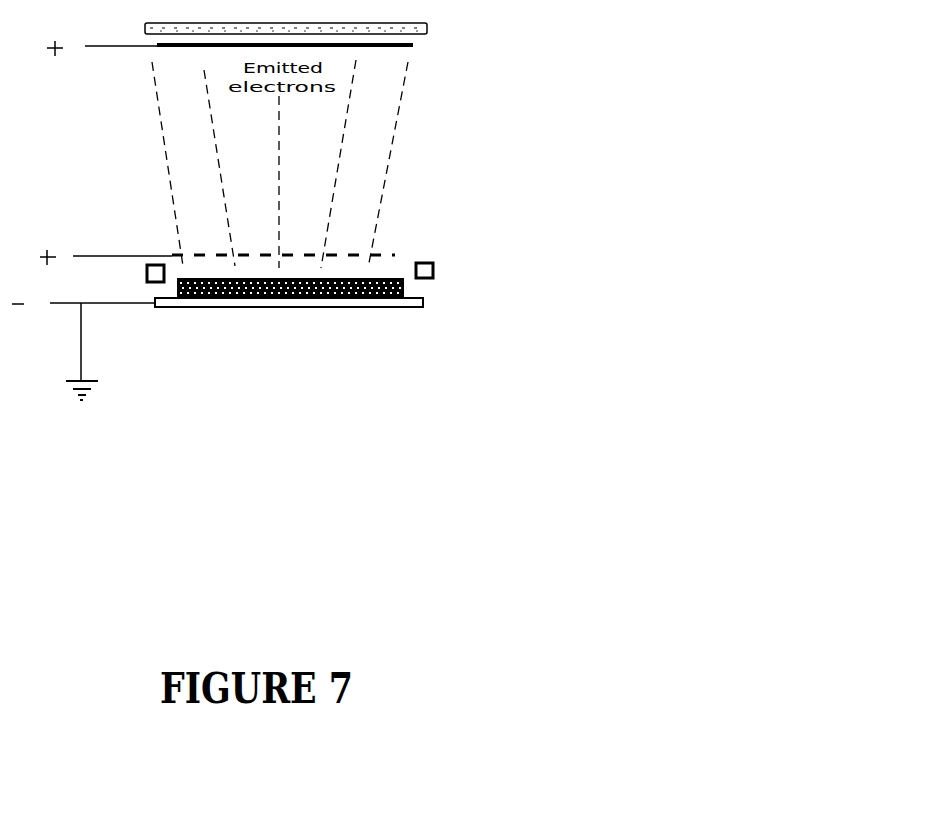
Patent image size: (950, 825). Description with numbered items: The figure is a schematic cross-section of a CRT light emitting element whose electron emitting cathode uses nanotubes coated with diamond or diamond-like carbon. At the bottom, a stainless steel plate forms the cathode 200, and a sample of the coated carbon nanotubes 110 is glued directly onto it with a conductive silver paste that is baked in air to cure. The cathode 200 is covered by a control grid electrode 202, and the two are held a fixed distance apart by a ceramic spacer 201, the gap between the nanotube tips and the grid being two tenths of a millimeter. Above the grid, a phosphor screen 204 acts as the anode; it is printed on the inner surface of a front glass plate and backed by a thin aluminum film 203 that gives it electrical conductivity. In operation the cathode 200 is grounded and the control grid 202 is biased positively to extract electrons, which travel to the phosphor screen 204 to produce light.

The phosphor screen 204 is at (445, 26).
The aluminum film 203 is at (430, 55).
The control grid electrode 202 is at (405, 253).
The ceramic spacer 201 is at (447, 274).
The coated carbon nanotubes 110 is at (407, 285).
The cathode 200 is at (408, 312).